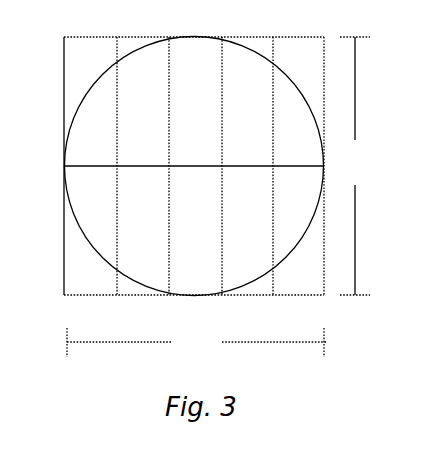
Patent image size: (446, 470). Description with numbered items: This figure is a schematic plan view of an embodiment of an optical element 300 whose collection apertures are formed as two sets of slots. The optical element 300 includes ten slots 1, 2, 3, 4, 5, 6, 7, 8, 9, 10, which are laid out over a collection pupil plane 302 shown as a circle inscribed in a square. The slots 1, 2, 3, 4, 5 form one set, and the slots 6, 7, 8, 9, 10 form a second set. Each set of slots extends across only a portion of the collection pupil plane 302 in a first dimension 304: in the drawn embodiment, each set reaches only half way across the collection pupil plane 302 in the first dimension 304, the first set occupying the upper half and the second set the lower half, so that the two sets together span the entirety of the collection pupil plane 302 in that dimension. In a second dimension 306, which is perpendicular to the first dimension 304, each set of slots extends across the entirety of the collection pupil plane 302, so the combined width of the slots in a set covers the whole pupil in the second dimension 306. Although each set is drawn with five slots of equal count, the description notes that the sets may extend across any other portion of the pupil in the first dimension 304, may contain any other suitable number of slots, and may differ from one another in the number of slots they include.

The optical element 300 is at (140, 25).
The collection pupil plane 302 is at (77, 296).
The first dimension 304 is at (355, 166).
The second dimension 306 is at (197, 342).
The slot 1 is at (90, 101).
The slot 2 is at (143, 101).
The slot 3 is at (195, 101).
The slot 4 is at (247, 101).
The slot 5 is at (298, 101).
The slot 6 is at (90, 230).
The slot 7 is at (143, 230).
The slot 8 is at (195, 230).
The slot 9 is at (247, 230).
The slot 10 is at (298, 230).